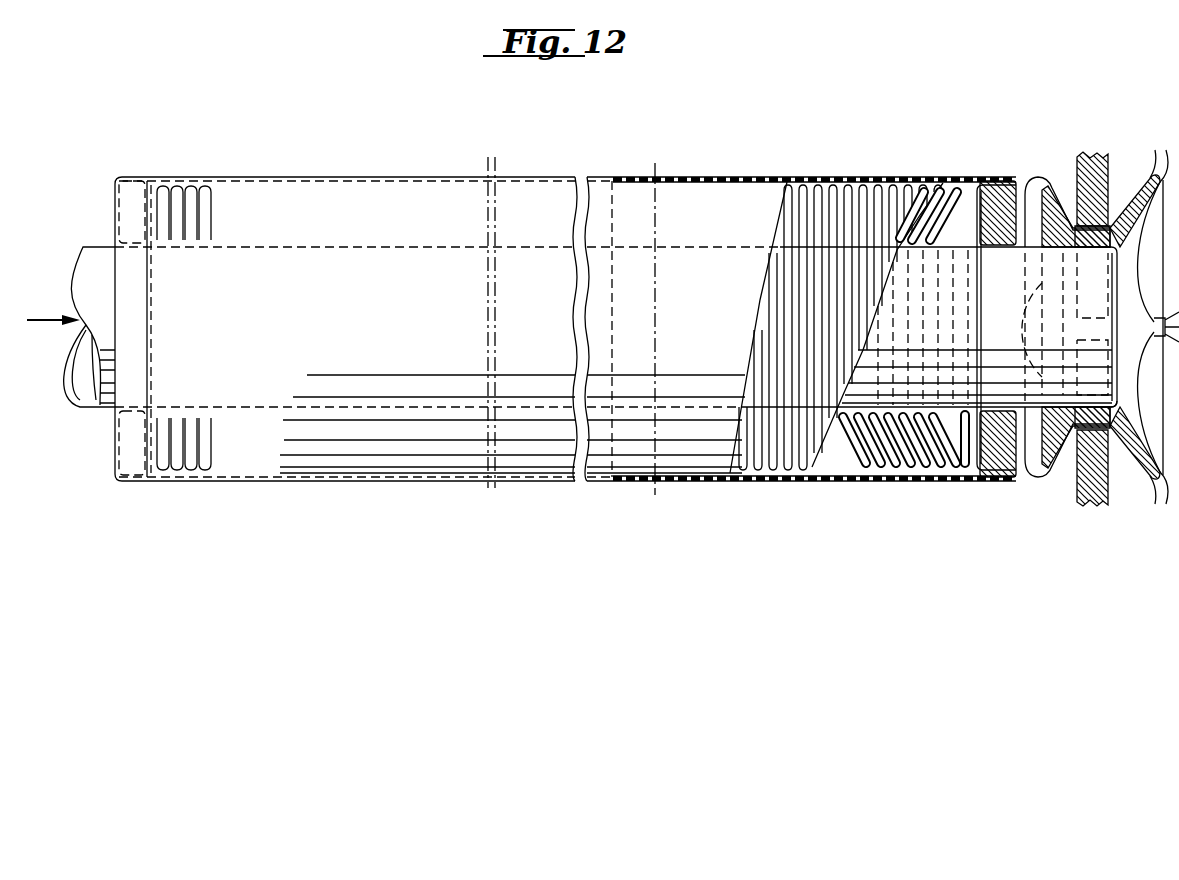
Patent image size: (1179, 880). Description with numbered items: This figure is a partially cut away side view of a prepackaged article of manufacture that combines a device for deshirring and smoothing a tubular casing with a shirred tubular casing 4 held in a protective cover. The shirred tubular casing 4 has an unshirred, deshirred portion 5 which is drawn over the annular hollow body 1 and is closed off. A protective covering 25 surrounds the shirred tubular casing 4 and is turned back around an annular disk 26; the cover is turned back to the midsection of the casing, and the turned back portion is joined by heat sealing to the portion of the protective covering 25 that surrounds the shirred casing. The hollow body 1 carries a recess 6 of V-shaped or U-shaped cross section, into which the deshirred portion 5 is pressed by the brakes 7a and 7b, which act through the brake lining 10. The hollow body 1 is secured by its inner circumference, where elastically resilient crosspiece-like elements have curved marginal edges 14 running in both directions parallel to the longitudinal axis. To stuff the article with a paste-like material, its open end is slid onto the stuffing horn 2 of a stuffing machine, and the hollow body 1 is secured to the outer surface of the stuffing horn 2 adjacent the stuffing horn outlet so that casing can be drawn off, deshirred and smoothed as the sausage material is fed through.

The annular hollow body 1 is at (1120, 401).
The stuffing horn 2 is at (98, 262).
The shirred tubular casing 4 is at (212, 224).
The deshirred portion 5 is at (1156, 170).
The recess 6 is at (1060, 192).
The brake 7a is at (1085, 497).
The brake 7b is at (1092, 168).
The brake lining 10 is at (1112, 218).
The marginal edges 14 is at (1022, 330).
The protective covering 25 is at (350, 177).
The annular disk 26 is at (133, 205).